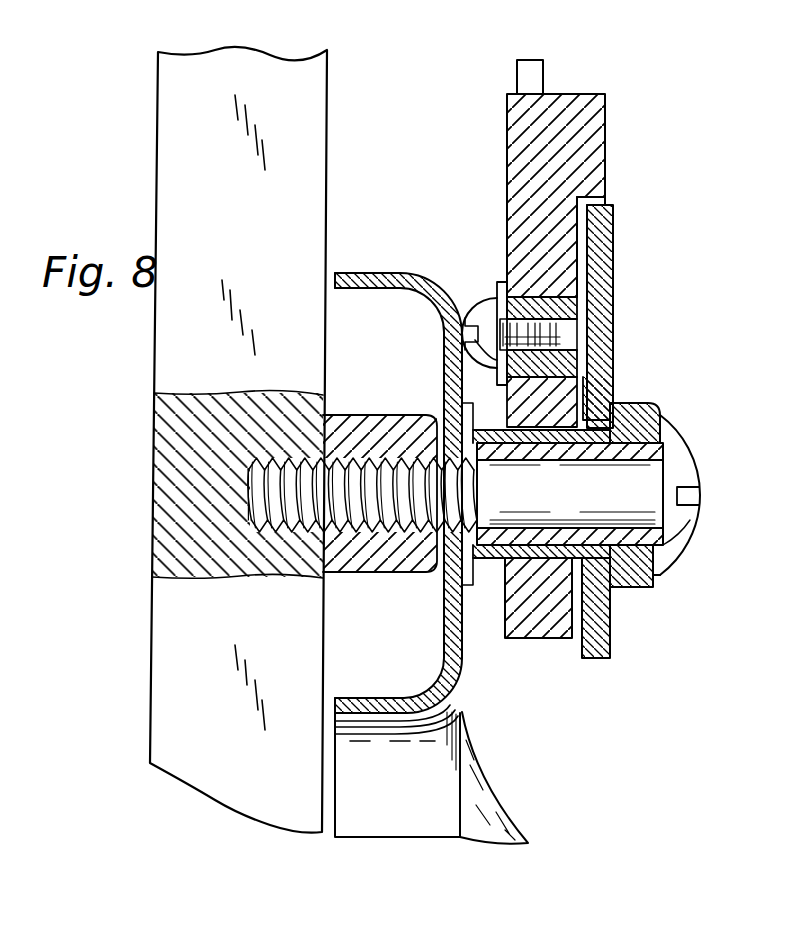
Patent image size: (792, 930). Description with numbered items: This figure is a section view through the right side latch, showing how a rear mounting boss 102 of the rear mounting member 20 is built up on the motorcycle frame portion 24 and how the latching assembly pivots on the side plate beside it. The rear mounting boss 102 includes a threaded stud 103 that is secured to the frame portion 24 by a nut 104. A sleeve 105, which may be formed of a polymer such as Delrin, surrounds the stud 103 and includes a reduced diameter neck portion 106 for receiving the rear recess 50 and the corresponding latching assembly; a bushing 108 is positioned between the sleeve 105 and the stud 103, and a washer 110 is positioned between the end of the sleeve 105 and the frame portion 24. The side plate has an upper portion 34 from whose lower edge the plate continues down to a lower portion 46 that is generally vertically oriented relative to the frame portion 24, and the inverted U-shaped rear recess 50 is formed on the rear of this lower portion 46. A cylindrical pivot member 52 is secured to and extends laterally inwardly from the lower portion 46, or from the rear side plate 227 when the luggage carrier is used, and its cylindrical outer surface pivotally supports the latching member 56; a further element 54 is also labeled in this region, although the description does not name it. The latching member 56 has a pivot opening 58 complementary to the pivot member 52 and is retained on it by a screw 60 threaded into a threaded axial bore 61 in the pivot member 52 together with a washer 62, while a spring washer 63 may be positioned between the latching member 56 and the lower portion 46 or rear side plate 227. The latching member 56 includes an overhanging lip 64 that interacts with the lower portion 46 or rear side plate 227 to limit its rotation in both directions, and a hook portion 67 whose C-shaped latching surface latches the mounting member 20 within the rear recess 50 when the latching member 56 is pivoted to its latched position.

The rear mounting member 20 is at (484, 181).
The motorcycle frame portion 24 is at (378, 258).
The upper portion 34 is at (543, 75).
The lower portion 46 is at (655, 316).
The rear side plate 227 is at (612, 236).
The rear recess 50 is at (600, 527).
The pivot member 52 is at (575, 355).
The retainer 54 is at (575, 323).
The latching member 56 is at (600, 108).
The pivot opening 58 is at (505, 298).
The screw 60 is at (455, 322).
The threaded axial bore 61 is at (495, 345).
The washer 62 is at (490, 288).
The spring washer 63 is at (598, 278).
The overhanging lip 64 is at (600, 200).
The hook portion 67 is at (525, 625).
The rear mounting boss 102 is at (607, 493).
The threaded stud 103 is at (672, 455).
The nut 104 is at (355, 577).
The sleeve 105 is at (625, 420).
The neck portion 106 is at (560, 600).
The bushing 108 is at (645, 587).
The washer 110 is at (450, 598).